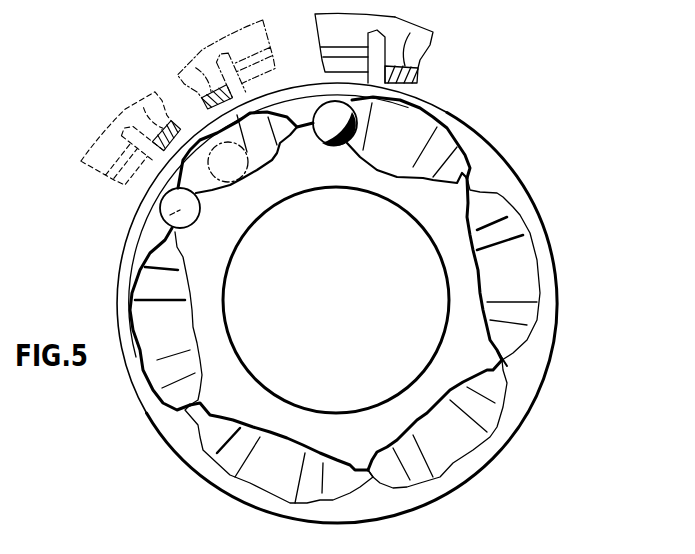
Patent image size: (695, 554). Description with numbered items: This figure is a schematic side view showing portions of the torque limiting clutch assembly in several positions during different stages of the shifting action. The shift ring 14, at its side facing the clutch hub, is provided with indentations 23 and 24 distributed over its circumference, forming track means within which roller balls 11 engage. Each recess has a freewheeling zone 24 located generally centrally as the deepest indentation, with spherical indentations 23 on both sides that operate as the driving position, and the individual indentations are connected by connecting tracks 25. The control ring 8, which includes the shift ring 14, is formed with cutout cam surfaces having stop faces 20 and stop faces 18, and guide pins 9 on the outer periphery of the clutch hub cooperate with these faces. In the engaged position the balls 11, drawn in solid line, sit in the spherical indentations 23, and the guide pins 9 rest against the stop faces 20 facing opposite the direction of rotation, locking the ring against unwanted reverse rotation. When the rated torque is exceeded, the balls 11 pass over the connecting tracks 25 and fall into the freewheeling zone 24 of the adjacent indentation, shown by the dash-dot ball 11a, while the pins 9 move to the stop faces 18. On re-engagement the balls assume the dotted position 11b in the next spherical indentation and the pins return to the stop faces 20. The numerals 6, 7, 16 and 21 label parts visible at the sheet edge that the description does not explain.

The sealing element 6 is at (415, 57).
The pump housing part 7 is at (250, 543).
The control ring 8 is at (352, 550).
The guide pins 9 is at (320, 48).
The roller balls 11 is at (352, 112).
The dash-dot representation of the ball 11a is at (240, 176).
The dotted position of the ball 11b is at (160, 219).
The shift ring 14 is at (182, 433).
The shaft 16 is at (409, 550).
The stop faces 18 is at (188, 57).
The stop faces 20 is at (433, 36).
The inlet 21 is at (296, 549).
The spherical indentations 23 is at (361, 300).
The freewheeling zone 24 is at (447, 441).
The connecting tracks 25 is at (503, 367).